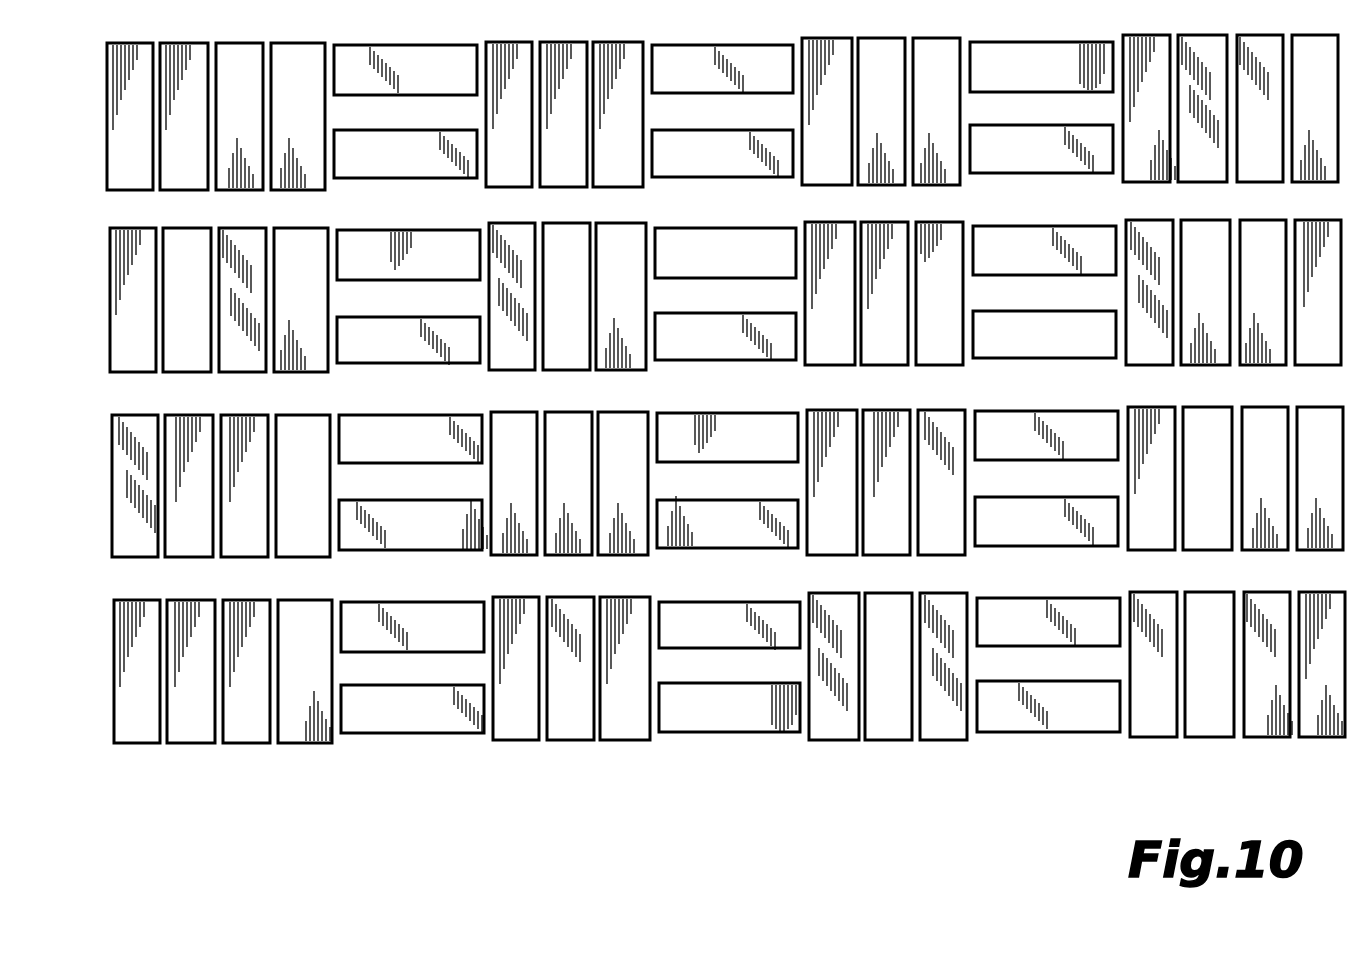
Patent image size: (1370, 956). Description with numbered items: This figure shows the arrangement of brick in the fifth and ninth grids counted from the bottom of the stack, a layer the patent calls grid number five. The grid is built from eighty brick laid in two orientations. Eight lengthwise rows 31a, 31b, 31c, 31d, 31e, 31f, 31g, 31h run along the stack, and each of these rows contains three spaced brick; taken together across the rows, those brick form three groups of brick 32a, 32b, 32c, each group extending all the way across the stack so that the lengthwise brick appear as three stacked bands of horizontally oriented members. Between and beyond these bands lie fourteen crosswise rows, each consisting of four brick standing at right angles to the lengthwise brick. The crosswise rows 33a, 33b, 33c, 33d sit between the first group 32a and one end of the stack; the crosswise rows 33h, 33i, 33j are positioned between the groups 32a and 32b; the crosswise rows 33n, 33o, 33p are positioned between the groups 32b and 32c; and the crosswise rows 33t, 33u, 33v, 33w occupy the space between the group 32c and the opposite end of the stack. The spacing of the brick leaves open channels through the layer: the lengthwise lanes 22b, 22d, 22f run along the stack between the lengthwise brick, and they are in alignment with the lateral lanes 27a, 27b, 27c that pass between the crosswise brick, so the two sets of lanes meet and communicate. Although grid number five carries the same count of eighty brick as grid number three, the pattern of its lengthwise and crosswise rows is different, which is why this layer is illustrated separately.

The lengthwise lane 22b is at (1041, 107).
The lengthwise lane 22d is at (1044, 311).
The lengthwise lane 22f is at (1046, 497).
The lateral lane 27a is at (570, 173).
The lateral lane 27b is at (567, 311).
The lateral lane 27c is at (569, 499).
The lengthwise row 31a is at (1024, 10).
The lengthwise row 31b is at (1025, 95).
The lengthwise row 31c is at (725, 237).
The lengthwise row 31d is at (725, 323).
The lengthwise row 31e is at (410, 423).
The lengthwise row 31f is at (410, 510).
The lengthwise row 31g is at (1048, 606).
The lengthwise row 31h is at (1048, 692).
The group of brick 32a is at (412, 712).
The group of brick 32b is at (729, 707).
The group of brick 32c is at (1048, 689).
The crosswise row 33a is at (137, 705).
The crosswise row 33b is at (195, 700).
The crosswise row 33c is at (246, 707).
The crosswise row 33d is at (305, 691).
The crosswise row 33h is at (516, 693).
The crosswise row 33i is at (570, 703).
The crosswise row 33j is at (625, 708).
The crosswise row 33n is at (834, 688).
The crosswise row 33o is at (888, 696).
The crosswise row 33p is at (942, 704).
The crosswise row 33t is at (1152, 685).
The crosswise row 33u is at (1209, 692).
The crosswise row 33v is at (1265, 701).
The crosswise row 33w is at (1322, 697).